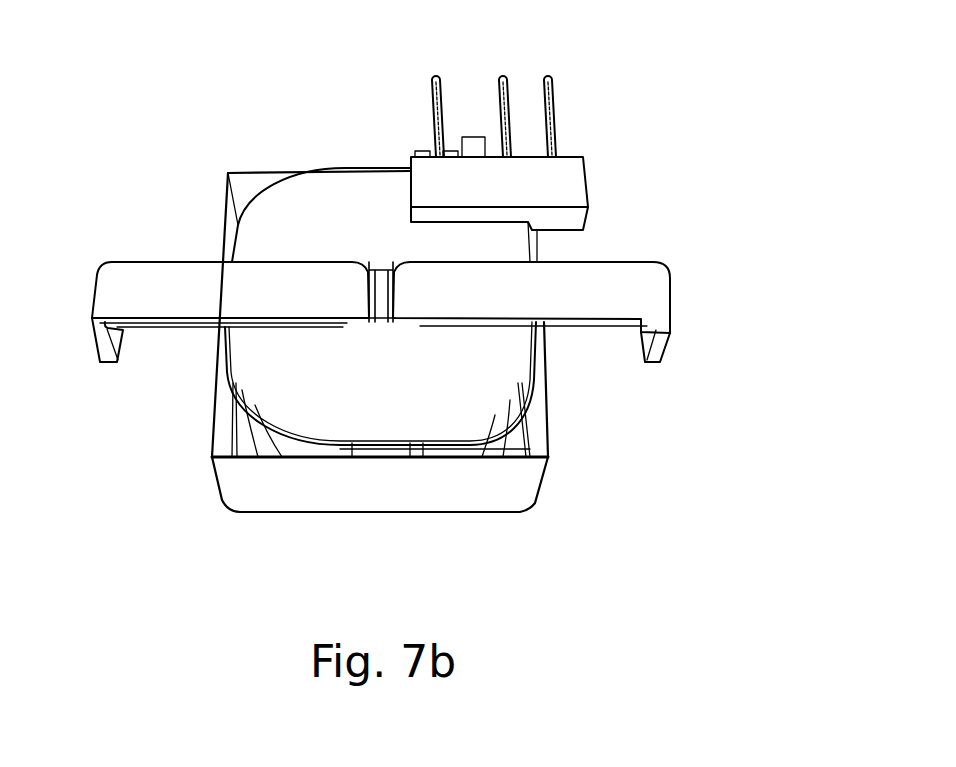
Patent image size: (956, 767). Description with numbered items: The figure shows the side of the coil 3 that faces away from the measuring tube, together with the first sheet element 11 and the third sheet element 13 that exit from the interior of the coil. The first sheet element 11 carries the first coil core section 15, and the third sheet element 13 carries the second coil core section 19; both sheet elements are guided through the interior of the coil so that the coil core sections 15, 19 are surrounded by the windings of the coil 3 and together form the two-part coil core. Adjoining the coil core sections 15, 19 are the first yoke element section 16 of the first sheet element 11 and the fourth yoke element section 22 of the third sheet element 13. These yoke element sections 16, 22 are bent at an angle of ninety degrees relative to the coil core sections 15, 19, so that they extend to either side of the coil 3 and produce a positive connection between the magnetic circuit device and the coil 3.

The coil 3 is at (483, 403).
The first sheet element 11 is at (147, 325).
The third sheet element 13 is at (617, 327).
The first coil core section 15 is at (374, 288).
The first yoke element section 16 is at (178, 277).
The second coil core section 19 is at (383, 305).
The fourth yoke element section 22 is at (633, 275).